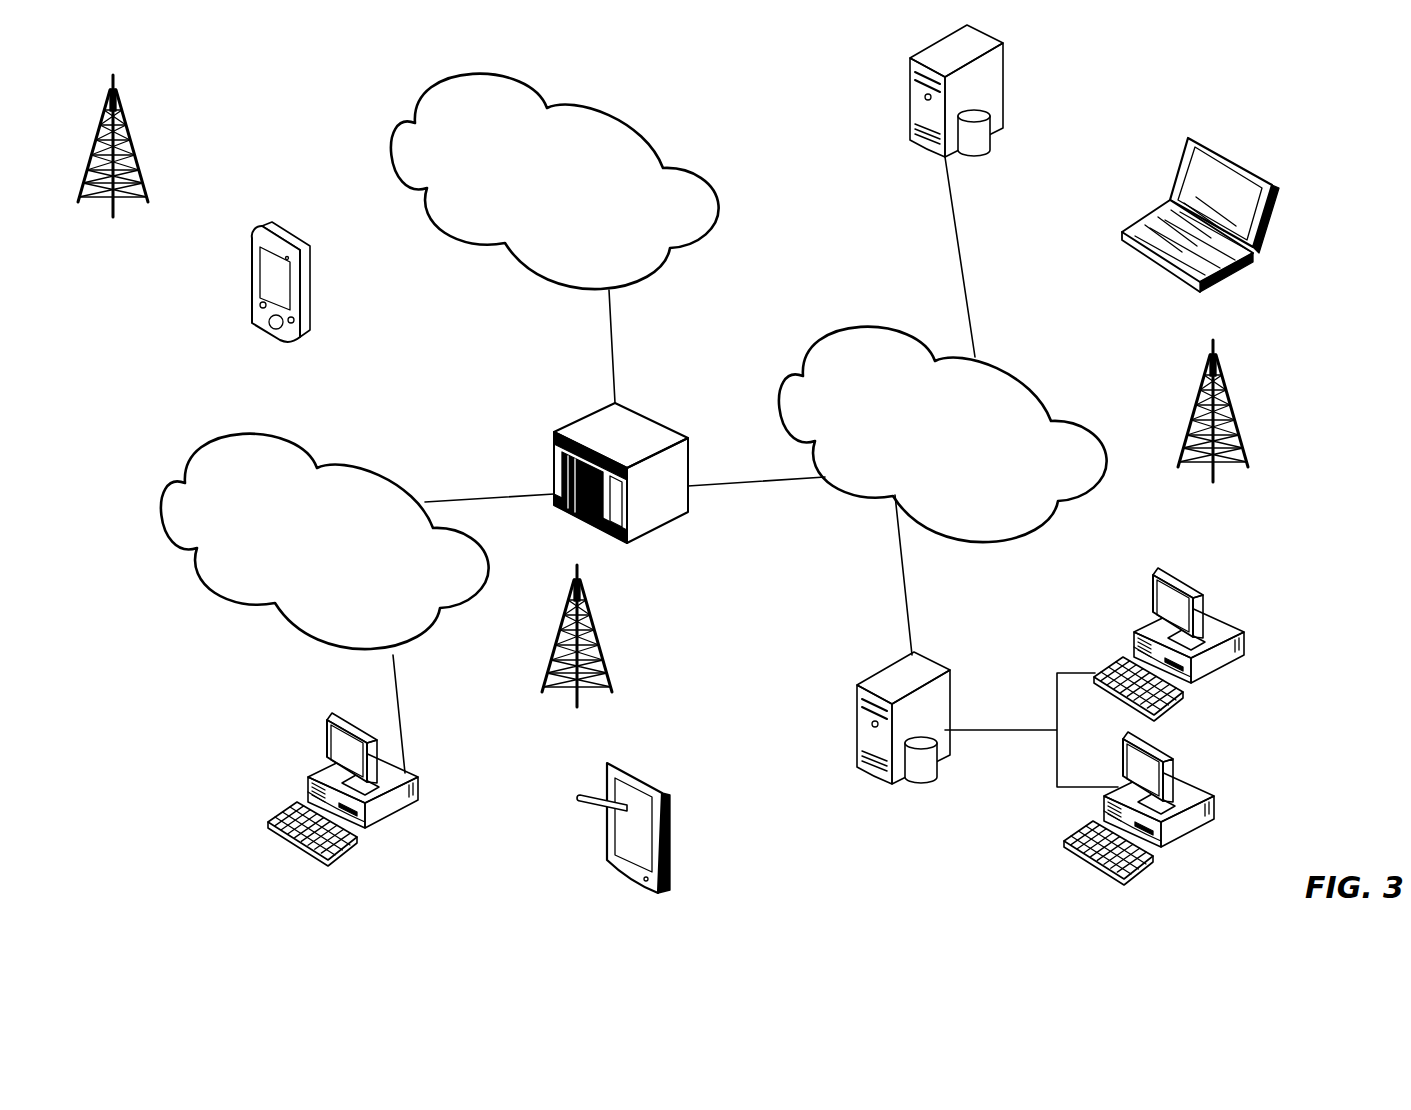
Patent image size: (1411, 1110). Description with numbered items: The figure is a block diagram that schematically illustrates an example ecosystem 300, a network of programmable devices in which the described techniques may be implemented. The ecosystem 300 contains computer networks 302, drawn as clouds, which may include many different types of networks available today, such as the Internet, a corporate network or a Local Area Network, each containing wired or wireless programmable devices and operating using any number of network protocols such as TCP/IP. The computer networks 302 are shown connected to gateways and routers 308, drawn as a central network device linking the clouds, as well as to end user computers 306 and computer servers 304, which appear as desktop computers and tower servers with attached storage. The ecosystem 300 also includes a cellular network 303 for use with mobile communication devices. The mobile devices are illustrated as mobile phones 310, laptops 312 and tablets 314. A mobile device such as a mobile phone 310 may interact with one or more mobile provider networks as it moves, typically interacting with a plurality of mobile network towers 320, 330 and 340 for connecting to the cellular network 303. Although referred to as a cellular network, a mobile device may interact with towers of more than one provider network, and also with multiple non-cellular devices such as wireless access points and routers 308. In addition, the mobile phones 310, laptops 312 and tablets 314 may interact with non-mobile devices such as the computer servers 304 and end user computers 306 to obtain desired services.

The ecosystem 300 is at (1105, 122).
The computer networks 302 is at (303, 450).
The cellular network 303 is at (603, 108).
The computer servers 304 is at (910, 82).
The end user computers 306 is at (418, 780).
The gateways and routers 308 is at (647, 415).
The mobile phones 310 is at (290, 235).
The laptops 312 is at (1245, 167).
The tablets 314 is at (650, 778).
The mobile network tower 320 is at (577, 652).
The mobile network tower 330 is at (1213, 428).
The mobile network tower 340 is at (113, 161).